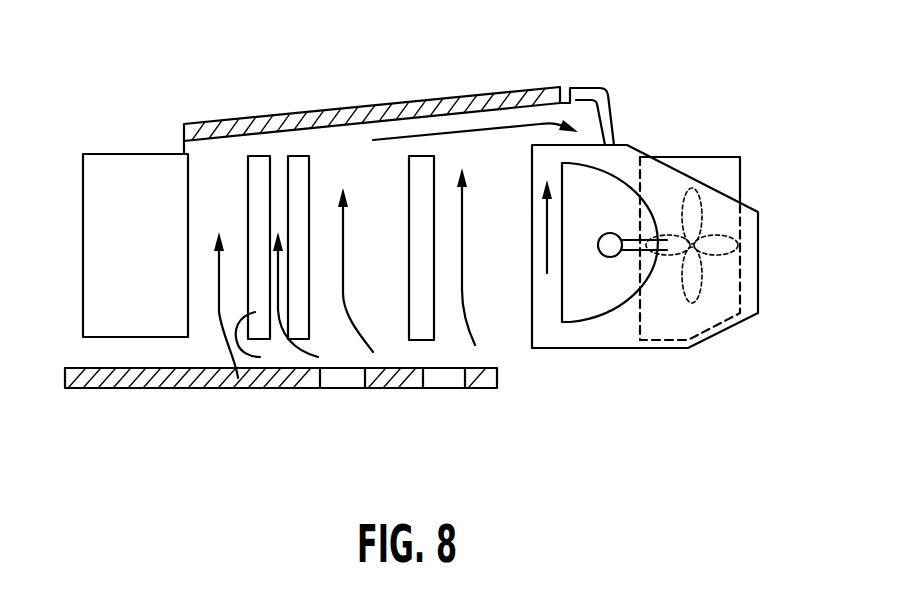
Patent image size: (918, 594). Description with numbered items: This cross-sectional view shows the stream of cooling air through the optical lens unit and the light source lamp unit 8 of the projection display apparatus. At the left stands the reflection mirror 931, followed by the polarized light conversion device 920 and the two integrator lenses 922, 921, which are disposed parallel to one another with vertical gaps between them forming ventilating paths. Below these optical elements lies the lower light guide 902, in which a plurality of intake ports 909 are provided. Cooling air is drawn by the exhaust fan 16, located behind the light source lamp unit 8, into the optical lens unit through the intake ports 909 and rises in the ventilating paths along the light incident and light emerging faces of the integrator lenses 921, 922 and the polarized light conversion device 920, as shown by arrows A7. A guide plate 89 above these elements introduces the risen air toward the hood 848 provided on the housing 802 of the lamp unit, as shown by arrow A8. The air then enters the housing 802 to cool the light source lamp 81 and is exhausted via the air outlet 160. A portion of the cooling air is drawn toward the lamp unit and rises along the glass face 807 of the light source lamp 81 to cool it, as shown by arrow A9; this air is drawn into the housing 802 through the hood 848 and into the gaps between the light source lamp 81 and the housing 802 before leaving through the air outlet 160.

The light source lamp unit 8 is at (829, 229).
The exhaust fan 16 is at (741, 180).
The air outlet 160 is at (757, 242).
The light source lamp 81 is at (612, 198).
The guide plate 89 is at (592, 90).
The hood 848 is at (600, 117).
The housing 802 is at (760, 290).
The glass face 807 is at (567, 303).
The lower light guide 902 is at (273, 389).
The intake ports 909 is at (335, 378).
The polarized light conversion device 920 is at (250, 316).
The integrator lens 921 is at (430, 322).
The integrator lens 922 is at (308, 320).
The reflection mirror 931 is at (100, 189).
The arrows A7 is at (219, 283).
The arrow A8 is at (518, 124).
The arrow A9 is at (547, 228).